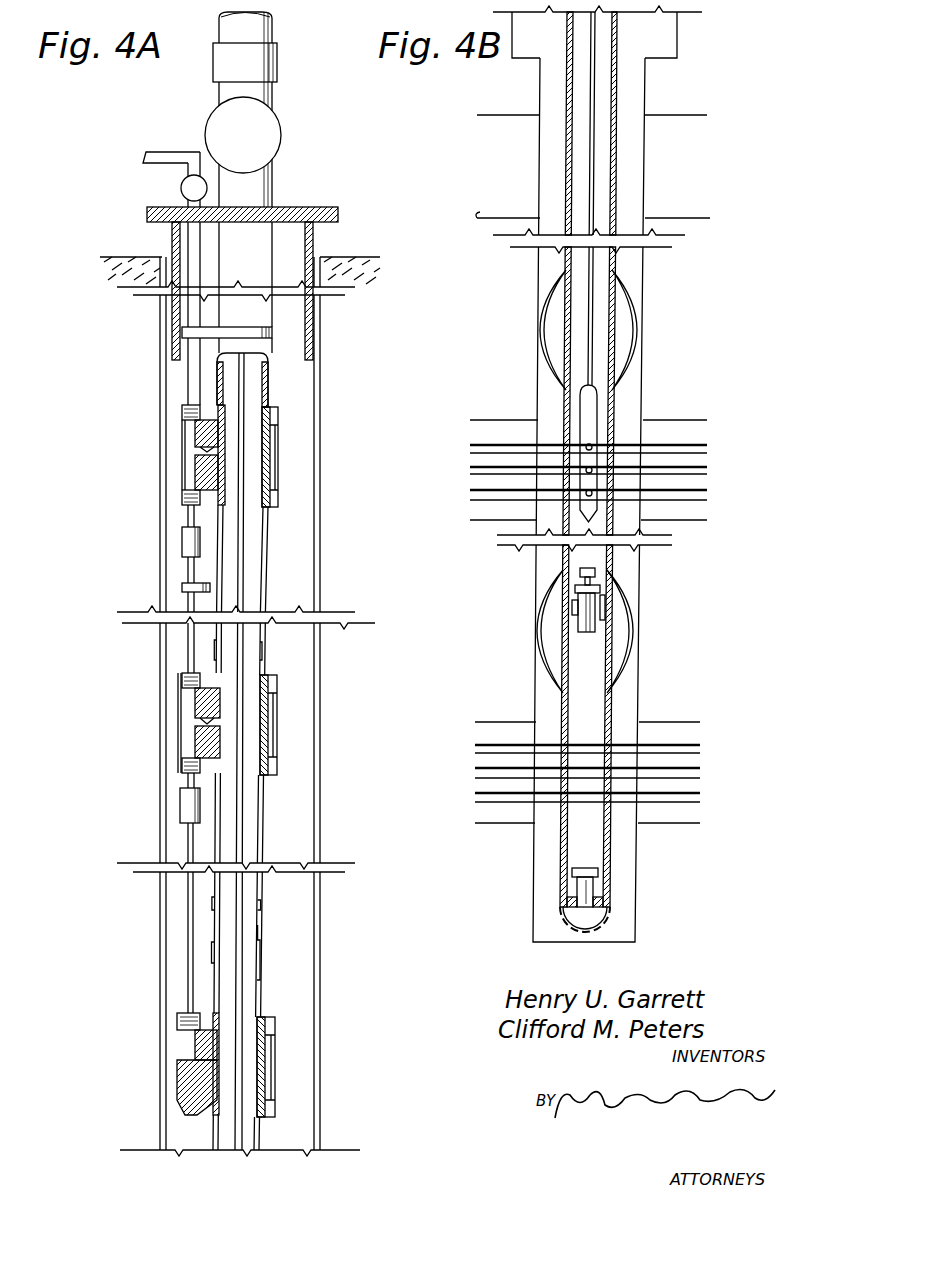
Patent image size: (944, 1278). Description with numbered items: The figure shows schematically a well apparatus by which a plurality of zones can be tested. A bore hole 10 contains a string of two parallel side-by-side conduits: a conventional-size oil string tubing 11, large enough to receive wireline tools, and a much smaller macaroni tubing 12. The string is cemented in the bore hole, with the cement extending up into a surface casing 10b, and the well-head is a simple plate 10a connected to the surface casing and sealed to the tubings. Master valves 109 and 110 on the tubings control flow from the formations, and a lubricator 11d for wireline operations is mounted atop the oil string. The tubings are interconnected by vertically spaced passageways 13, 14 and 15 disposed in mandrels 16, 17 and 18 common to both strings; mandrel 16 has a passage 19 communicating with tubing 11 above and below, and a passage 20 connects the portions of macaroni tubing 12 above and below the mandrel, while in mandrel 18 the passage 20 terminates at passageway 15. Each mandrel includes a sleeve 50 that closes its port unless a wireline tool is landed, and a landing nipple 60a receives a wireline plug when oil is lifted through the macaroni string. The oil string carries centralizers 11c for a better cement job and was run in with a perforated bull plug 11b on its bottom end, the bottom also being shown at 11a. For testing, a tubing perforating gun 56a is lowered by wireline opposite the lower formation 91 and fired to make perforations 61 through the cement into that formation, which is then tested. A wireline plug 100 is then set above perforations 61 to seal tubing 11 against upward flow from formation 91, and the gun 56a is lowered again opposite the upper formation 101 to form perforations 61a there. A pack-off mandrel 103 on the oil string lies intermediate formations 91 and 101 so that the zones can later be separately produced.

In FIG. 4A, the lubricator 11d is at (268, 30).
In FIG. 4A, the master valve 109 is at (281, 116).
In FIG. 4A, the master valve 110 is at (180, 187).
In FIG. 4A, the plate 10a is at (297, 209).
In FIG. 4A, the surface casing 10b is at (333, 273).
In FIG. 4A, the passage 19 is at (245, 402).
In FIG. 4A, the passage 20 is at (190, 432).
In FIG. 4A, the mandrel 16 is at (185, 450).
In FIG. 4A, the passageway 13 is at (190, 457).
In FIG. 4A, the bore hole 10 is at (322, 455).
In FIG. 4B, the bore hole 10 is at (642, 272).
In FIG. 4A, the sleeve 50 is at (270, 468).
In FIG. 4A, the mandrel 17 is at (182, 705).
In FIG. 4A, the passageway 14 is at (188, 738).
In FIG. 4A, the macaroni tubing 12 is at (188, 840).
In FIG. 4A, the tubing 11 is at (265, 817).
In FIG. 4A, the landing nipple 60a is at (262, 932).
In FIG. 4A, the passageway 15 is at (210, 1060).
In FIG. 4A, the mandrel 18 is at (198, 1085).
In FIG. 4B, the centralizer 11c is at (640, 293).
In FIG. 4B, the upper formation 101 is at (472, 423).
In FIG. 4B, the tubing perforating gun 56a is at (594, 410).
In FIG. 4B, the perforations 61a is at (677, 445).
In FIG. 4B, the pack-off mandrel 103 is at (605, 597).
In FIG. 4B, the wireline plug 100 is at (583, 613).
In FIG. 4B, the formation 91 is at (498, 717).
In FIG. 4B, the perforations 61 is at (680, 753).
In FIG. 4B, the bottom plug 11a is at (600, 890).
In FIG. 4B, the perforated bull plug 11b is at (608, 902).